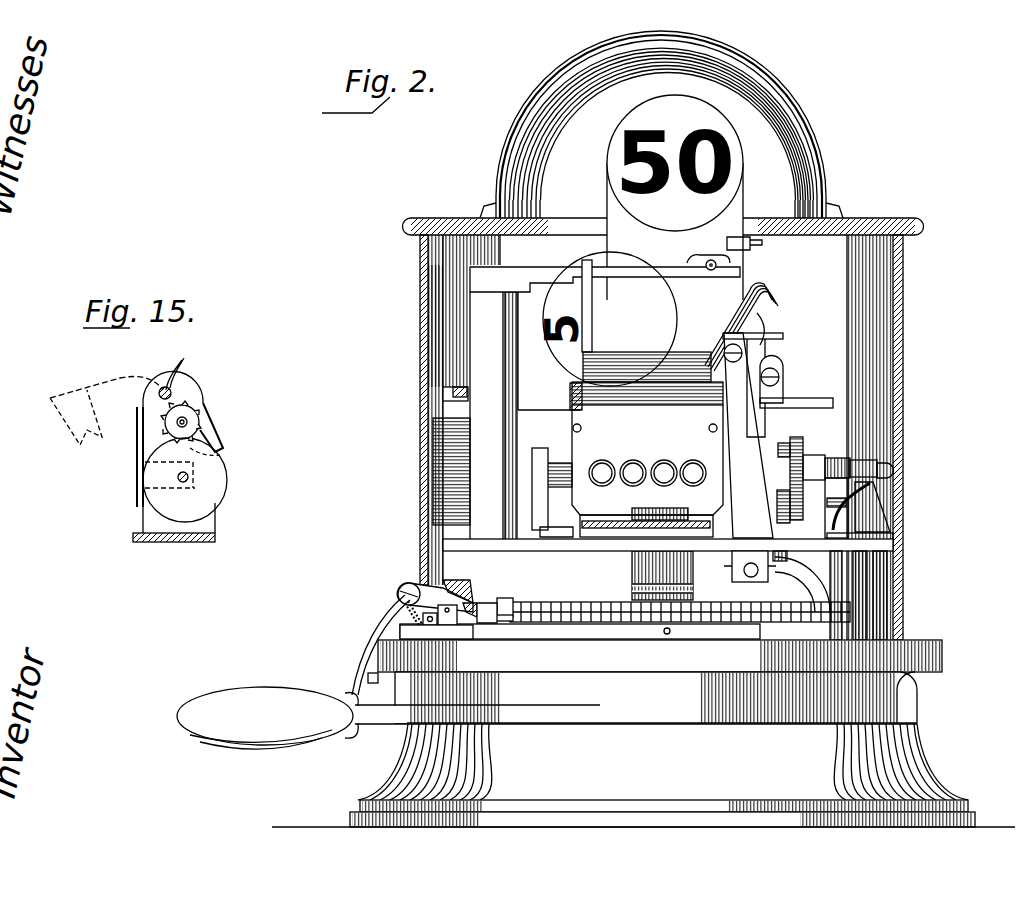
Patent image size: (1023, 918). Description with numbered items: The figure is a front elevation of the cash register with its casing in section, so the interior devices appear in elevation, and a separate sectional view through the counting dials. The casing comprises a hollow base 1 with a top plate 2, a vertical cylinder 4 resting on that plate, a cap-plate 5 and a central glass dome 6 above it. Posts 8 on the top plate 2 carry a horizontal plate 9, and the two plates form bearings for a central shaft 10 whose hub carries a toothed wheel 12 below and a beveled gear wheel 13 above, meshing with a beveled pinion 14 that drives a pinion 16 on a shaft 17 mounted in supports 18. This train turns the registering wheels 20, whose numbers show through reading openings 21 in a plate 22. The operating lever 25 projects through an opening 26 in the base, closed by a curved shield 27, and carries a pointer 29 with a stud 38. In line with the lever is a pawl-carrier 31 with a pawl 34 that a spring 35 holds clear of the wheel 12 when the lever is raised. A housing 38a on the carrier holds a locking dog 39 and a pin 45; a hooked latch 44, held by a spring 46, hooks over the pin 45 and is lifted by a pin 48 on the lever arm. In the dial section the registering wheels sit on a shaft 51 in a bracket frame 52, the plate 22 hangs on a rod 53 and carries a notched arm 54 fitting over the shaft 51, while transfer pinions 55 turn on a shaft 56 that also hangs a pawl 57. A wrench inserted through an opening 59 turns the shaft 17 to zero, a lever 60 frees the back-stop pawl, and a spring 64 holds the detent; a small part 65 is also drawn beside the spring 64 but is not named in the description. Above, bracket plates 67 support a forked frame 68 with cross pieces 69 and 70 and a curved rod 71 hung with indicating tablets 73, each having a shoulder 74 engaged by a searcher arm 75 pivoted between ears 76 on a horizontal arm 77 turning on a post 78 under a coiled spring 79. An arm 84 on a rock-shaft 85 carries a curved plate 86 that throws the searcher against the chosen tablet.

In FIG. 2, the hollow base 1 is at (643, 775).
In FIG. 2, the top plate 2 is at (660, 656).
In FIG. 2, the vertical cylinder 4 is at (904, 382).
In FIG. 2, the cap-plate 5 is at (874, 217).
In FIG. 2, the glass dome 6 is at (818, 147).
In FIG. 2, the posts 8 is at (870, 572).
In FIG. 2, the horizontal plate 9 is at (551, 551).
In FIG. 2, the central shaft 10 is at (668, 510).
In FIG. 2, the toothed wheel 12 is at (598, 610).
In FIG. 2, the beveled gear wheel 13 is at (600, 520).
In FIG. 2, the beveled pinion 14 is at (784, 443).
In FIG. 2, the pinion 16 is at (803, 450).
In FIG. 2, the shaft 17 is at (565, 470).
In FIG. 2, the supports 18 is at (566, 495).
In FIG. 15, the registering wheels 20 is at (215, 489).
In FIG. 2, the reading openings 21 is at (640, 463).
In FIG. 15, the reading openings 21 is at (140, 470).
In FIG. 2, the plate 22 is at (647, 433).
In FIG. 15, the plate 22 is at (120, 384).
In FIG. 2, the operating handle or lever 25 is at (390, 727).
In FIG. 2, the opening 26 is at (917, 692).
In FIG. 2, the curved plate or shield 27 is at (656, 697).
In FIG. 2, the pointer 29 is at (368, 648).
In FIG. 2, the arm or pawl-carrier 31 is at (562, 640).
In FIG. 2, the pawl 34 is at (513, 603).
In FIG. 2, the spring 35 is at (503, 622).
In FIG. 2, the stud 38 is at (378, 683).
In FIG. 2, the housing 38a is at (478, 625).
In FIG. 2, the locking dog 39 is at (473, 592).
In FIG. 2, the hooked latch 44 is at (412, 588).
In FIG. 2, the stud or pin 45 is at (440, 615).
In FIG. 2, the spring 46 is at (400, 612).
In FIG. 2, the pin 48 is at (436, 633).
In FIG. 15, the shaft 51 is at (190, 478).
In FIG. 2, the bracket frame 52 is at (570, 392).
In FIG. 15, the bracket frame 52 is at (215, 520).
In FIG. 15, the rod 53 is at (172, 391).
In FIG. 15, the arm or plate 54 is at (78, 440).
In FIG. 15, the transfer pinions 55 is at (198, 417).
In FIG. 15, the shaft 56 is at (190, 418).
In FIG. 15, the pawl 57 is at (215, 432).
In FIG. 2, the opening 59 is at (903, 468).
In FIG. 2, the lever 60 is at (873, 514).
In FIG. 2, the spring 64 is at (827, 504).
In FIG. 2, the wire 65 is at (833, 524).
In FIG. 2, the posts or vertical bracket plates 67 is at (486, 416).
In FIG. 2, the forked frame 68 is at (654, 268).
In FIG. 2, the cross piece 69 is at (593, 290).
In FIG. 2, the cross piece 70 is at (752, 246).
In FIG. 2, the curved rod 71 is at (709, 270).
In FIG. 2, the indicating tablets 73 is at (766, 302).
In FIG. 2, the shoulder 74 is at (750, 291).
In FIG. 2, the searcher arm 75 is at (765, 352).
In FIG. 2, the ears 76 is at (778, 395).
In FIG. 2, the horizontal arm 77 is at (820, 398).
In FIG. 2, the post 78 is at (462, 400).
In FIG. 2, the coiled spring 79 is at (470, 468).
In FIG. 2, the arm 84 is at (748, 435).
In FIG. 2, the rock-shaft 85 is at (750, 566).
In FIG. 2, the curved plate 86 is at (783, 334).